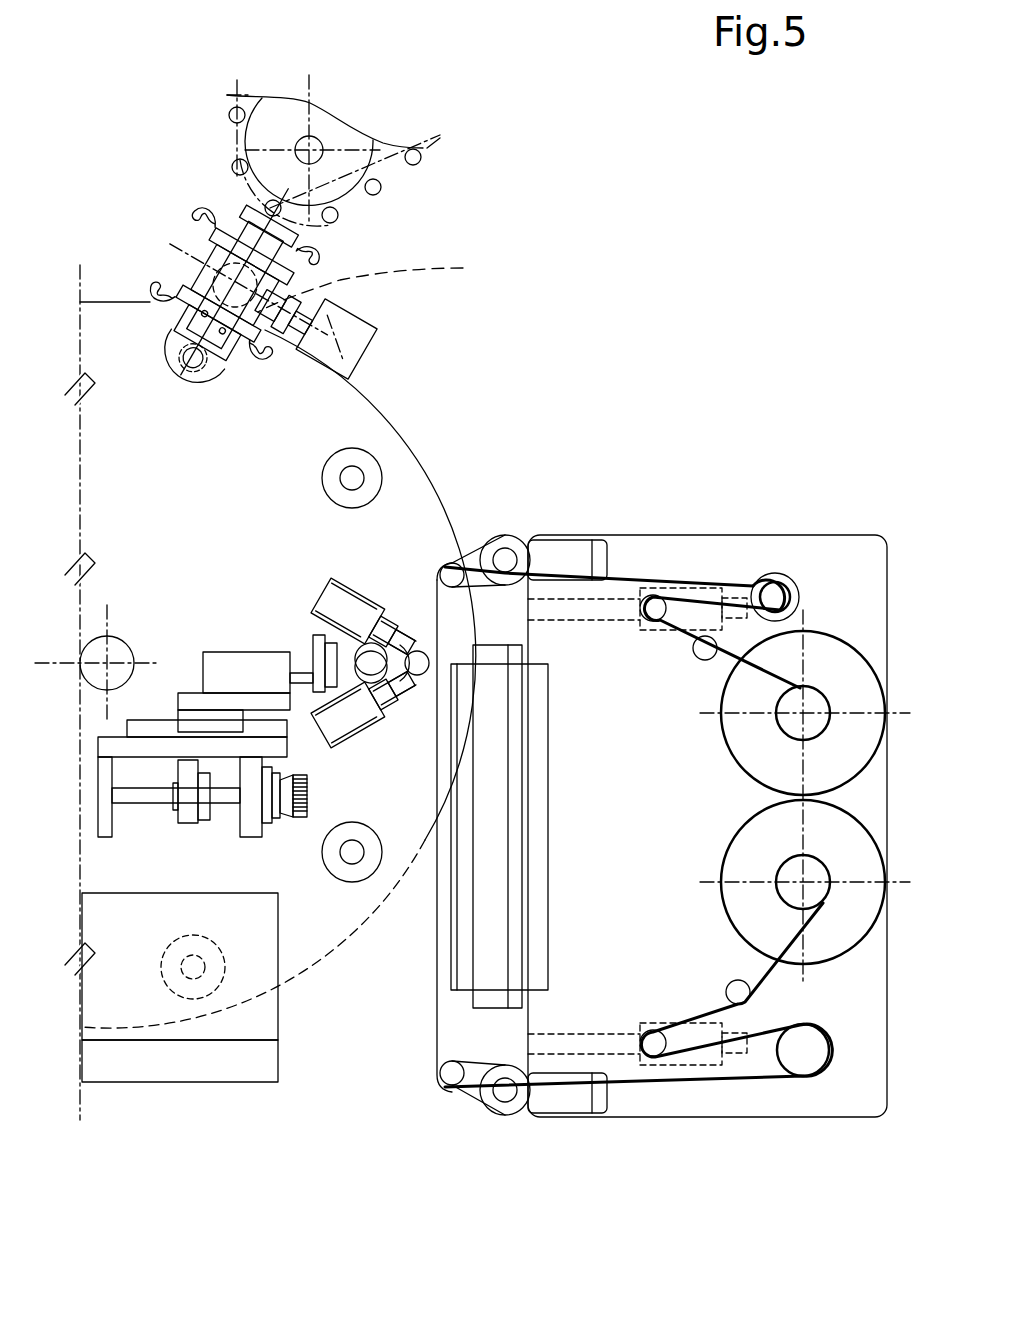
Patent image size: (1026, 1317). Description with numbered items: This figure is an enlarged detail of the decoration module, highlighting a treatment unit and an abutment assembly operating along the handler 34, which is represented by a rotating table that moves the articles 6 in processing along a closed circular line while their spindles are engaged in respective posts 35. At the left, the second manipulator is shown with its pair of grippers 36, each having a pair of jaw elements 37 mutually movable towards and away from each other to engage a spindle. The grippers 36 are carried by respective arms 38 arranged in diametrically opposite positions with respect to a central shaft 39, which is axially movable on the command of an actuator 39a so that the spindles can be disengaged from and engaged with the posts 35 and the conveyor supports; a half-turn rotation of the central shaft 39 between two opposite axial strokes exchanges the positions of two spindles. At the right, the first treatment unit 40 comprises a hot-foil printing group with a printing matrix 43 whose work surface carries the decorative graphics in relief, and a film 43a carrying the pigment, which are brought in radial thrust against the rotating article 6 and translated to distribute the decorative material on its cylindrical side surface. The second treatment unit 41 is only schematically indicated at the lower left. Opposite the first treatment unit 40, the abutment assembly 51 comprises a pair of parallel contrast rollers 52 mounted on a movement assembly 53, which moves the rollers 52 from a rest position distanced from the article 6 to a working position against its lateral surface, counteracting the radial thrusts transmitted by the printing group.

The article 6 is at (197, 370).
The handler 34 is at (368, 422).
The post 35 is at (167, 380).
The gripper 36 is at (157, 276).
The jaw element 37 is at (155, 303).
The arm 38 is at (303, 265).
The central shaft 39 is at (375, 284).
The actuator 39a is at (350, 333).
The first treatment unit 40 is at (705, 510).
The second treatment unit 41 is at (272, 1112).
The printing matrix 43 is at (495, 803).
The film 43a is at (437, 603).
The abutment assembly 51 is at (383, 735).
The contrast roller 52 is at (430, 637).
The movement assembly 53 is at (242, 648).